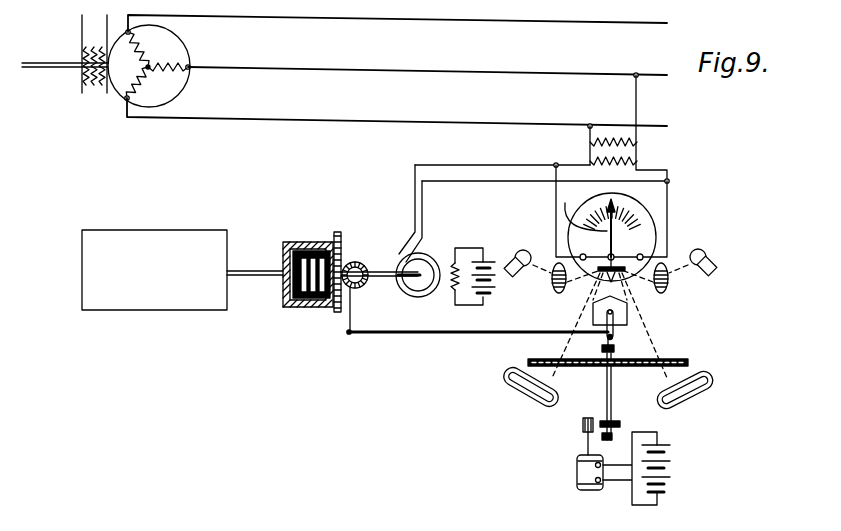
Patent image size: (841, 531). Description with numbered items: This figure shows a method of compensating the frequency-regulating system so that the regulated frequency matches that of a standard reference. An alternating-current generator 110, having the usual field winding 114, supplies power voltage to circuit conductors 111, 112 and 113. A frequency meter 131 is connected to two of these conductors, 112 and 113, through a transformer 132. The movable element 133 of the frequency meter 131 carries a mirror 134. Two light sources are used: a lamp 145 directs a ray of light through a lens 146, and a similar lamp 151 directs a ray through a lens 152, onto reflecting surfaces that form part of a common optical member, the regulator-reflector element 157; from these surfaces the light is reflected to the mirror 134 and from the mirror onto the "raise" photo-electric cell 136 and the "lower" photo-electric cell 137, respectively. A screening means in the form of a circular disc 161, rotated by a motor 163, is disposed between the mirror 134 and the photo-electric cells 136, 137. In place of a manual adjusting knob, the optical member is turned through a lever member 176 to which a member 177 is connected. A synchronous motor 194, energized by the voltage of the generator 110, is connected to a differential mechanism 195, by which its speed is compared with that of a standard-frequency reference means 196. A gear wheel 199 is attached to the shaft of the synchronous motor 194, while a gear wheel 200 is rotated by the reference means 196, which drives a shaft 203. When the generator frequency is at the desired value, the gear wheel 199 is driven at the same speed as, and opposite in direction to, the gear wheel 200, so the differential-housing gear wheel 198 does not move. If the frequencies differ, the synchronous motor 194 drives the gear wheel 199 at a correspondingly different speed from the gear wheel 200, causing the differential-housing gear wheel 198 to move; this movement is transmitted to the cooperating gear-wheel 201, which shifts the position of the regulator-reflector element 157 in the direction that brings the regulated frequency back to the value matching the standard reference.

The alternating-current generator 110 is at (160, 11).
The circuit conductor 111 is at (465, 23).
The circuit conductor 112 is at (459, 70).
The circuit conductor 113 is at (456, 122).
The field winding 114 is at (96, 84).
The frequency meter 131 is at (640, 187).
The transformer 132 is at (640, 148).
The movable element 133 is at (599, 208).
The mirror 134 is at (618, 265).
The raise photo-electric cell 136 is at (536, 403).
The lower photo-electric cell 137 is at (691, 399).
The lamp 145 is at (700, 250).
The lens 146 is at (669, 284).
The lamp 151 is at (518, 250).
The lens 152 is at (552, 284).
The regulator-reflector element 157 is at (593, 314).
The circular disc 161 is at (685, 361).
The motor 163 is at (580, 471).
The lever member 176 is at (615, 328).
The member 177 is at (458, 316).
The synchronous motor 194 is at (465, 237).
The differential mechanism 195 is at (320, 236).
The standard-frequency reference means 196 is at (180, 220).
The differential-housing gear wheel 198 is at (341, 243).
The gear wheel 199 is at (336, 312).
The gear wheel 200 is at (283, 297).
The cooperating gear-wheel 201 is at (366, 290).
The shaft 203 is at (270, 252).